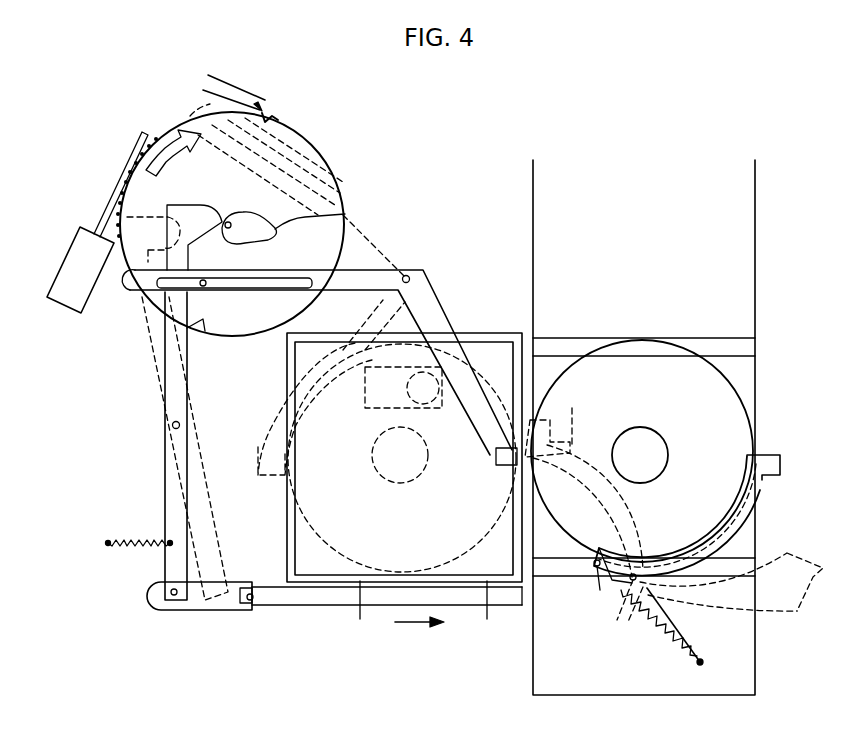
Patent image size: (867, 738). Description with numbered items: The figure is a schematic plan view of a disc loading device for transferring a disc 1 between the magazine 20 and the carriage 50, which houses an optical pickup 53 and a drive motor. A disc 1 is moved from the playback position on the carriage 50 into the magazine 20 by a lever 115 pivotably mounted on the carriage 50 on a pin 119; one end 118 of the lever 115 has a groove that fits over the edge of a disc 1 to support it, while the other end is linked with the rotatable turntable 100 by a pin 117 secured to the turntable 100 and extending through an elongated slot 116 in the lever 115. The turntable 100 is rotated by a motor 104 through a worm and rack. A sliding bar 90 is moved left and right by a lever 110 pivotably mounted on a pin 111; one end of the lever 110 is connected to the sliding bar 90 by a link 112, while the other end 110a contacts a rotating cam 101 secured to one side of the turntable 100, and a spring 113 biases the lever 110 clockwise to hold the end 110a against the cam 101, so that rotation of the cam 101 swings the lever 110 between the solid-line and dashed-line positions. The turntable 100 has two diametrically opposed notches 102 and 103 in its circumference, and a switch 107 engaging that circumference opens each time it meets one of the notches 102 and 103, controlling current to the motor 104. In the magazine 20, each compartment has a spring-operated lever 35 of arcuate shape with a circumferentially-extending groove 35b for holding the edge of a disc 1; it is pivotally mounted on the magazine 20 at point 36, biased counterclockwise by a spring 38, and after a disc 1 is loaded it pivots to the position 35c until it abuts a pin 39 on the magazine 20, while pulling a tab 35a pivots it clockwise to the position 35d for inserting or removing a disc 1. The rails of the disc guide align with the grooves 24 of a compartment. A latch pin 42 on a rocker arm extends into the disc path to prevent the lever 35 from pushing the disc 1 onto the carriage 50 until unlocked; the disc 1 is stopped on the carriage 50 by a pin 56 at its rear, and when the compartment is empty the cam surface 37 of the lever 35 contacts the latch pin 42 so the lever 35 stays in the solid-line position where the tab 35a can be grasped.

The disc 1 is at (670, 367).
The magazine 20 is at (743, 267).
The grooves 24 is at (568, 345).
The spring-operated lever 35 is at (747, 514).
The tab 35a is at (782, 462).
The circumferentially-extending groove 35b is at (738, 492).
The position of lever after loading 35c is at (584, 481).
The manually pivoted position of lever 35d is at (792, 600).
The pivot point 36 is at (672, 590).
The cam surface 37 is at (625, 590).
The spring 38 is at (673, 635).
The pin 39 is at (688, 626).
The latch pin 42 is at (600, 590).
The carriage 50 is at (504, 333).
The optical pickup 53 is at (363, 417).
The pin 56 is at (290, 508).
The sliding bar 90 is at (308, 600).
The turntable 100 is at (324, 165).
The cam 101 is at (343, 214).
The notch 102 is at (277, 122).
The notch 103 is at (200, 333).
The motor 104 is at (73, 297).
The switch 107 is at (232, 94).
The lever 110 is at (164, 510).
The end of lever 110a is at (201, 227).
The pin 111 is at (170, 425).
The link 112 is at (235, 610).
The spring 113 is at (133, 552).
The lever 115 is at (425, 290).
The elongated slot 116 is at (258, 280).
The pin 117 is at (205, 288).
The end of lever 118 is at (498, 457).
The pin 119 is at (409, 274).